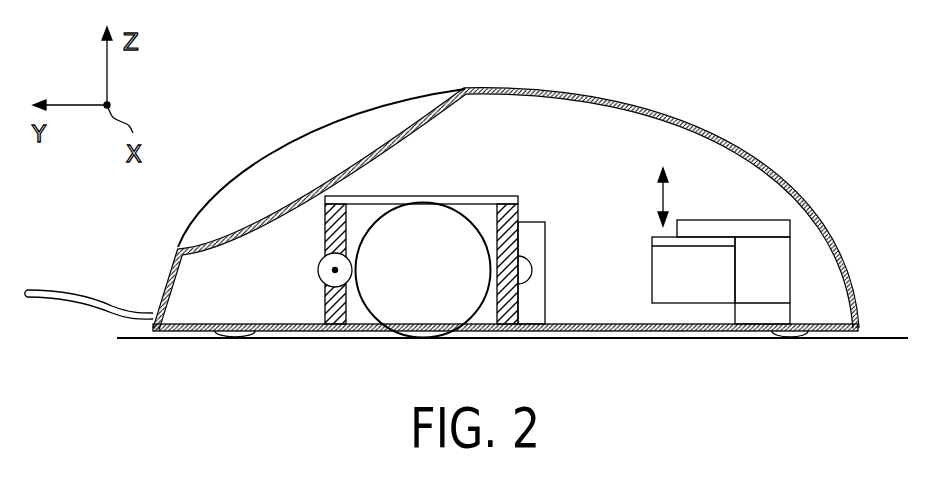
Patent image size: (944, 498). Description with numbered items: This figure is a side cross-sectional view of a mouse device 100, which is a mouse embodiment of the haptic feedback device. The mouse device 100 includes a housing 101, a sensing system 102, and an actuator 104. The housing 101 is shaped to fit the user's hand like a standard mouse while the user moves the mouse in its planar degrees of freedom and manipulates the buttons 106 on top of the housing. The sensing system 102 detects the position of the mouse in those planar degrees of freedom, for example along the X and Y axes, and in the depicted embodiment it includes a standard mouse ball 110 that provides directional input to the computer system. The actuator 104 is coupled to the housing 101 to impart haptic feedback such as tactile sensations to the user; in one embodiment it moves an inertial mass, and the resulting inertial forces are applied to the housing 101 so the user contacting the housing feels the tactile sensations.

The mouse device 100 is at (387, 62).
The housing 101 is at (850, 252).
The sensing system 102 is at (296, 292).
The actuator 104 is at (733, 189).
The buttons 106 is at (298, 190).
The mouse ball 110 is at (443, 284).